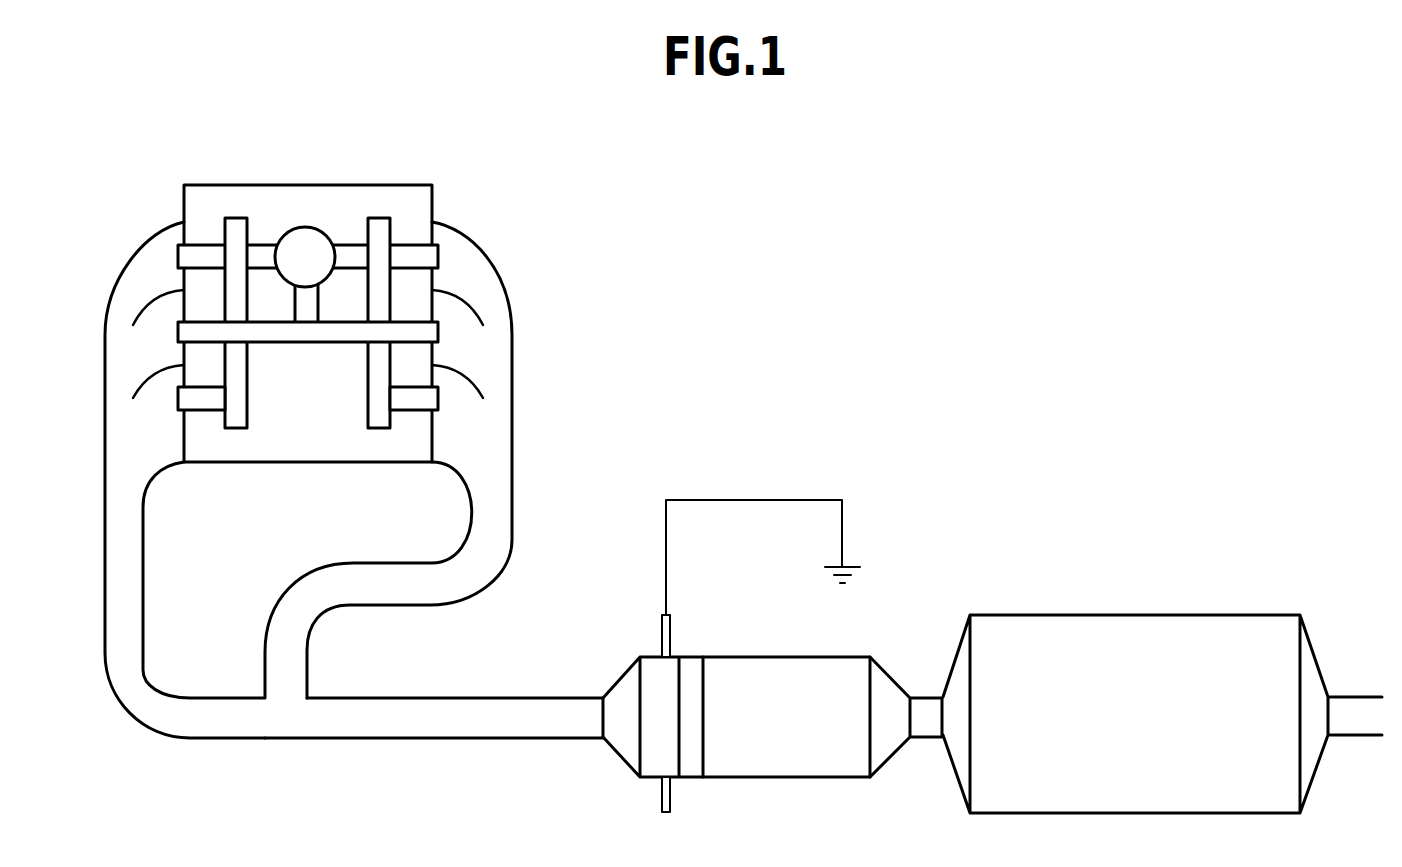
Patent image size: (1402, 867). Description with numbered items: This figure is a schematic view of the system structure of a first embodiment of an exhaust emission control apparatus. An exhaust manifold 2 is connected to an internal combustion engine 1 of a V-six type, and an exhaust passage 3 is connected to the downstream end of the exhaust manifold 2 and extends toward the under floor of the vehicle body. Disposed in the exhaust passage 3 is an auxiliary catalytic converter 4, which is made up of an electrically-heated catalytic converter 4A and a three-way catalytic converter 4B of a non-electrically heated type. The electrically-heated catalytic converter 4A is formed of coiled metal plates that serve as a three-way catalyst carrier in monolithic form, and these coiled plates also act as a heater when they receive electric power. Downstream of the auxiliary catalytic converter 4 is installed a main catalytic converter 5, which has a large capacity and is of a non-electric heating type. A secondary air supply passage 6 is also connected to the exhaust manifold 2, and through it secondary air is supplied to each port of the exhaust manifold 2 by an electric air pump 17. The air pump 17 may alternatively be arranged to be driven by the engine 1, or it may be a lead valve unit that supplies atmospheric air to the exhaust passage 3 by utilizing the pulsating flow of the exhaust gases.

The internal combustion engine 1 is at (305, 290).
The exhaust manifold 2 is at (472, 415).
The exhaust passage 3 is at (463, 725).
The auxiliary catalytic converter 4 is at (733, 665).
The electrically-heated catalytic converter 4A is at (657, 655).
The three-way catalytic converter 4B is at (737, 655).
The main catalytic converter 5 is at (993, 613).
The secondary air supply passage 6 is at (280, 273).
The electric air pump 17 is at (302, 252).